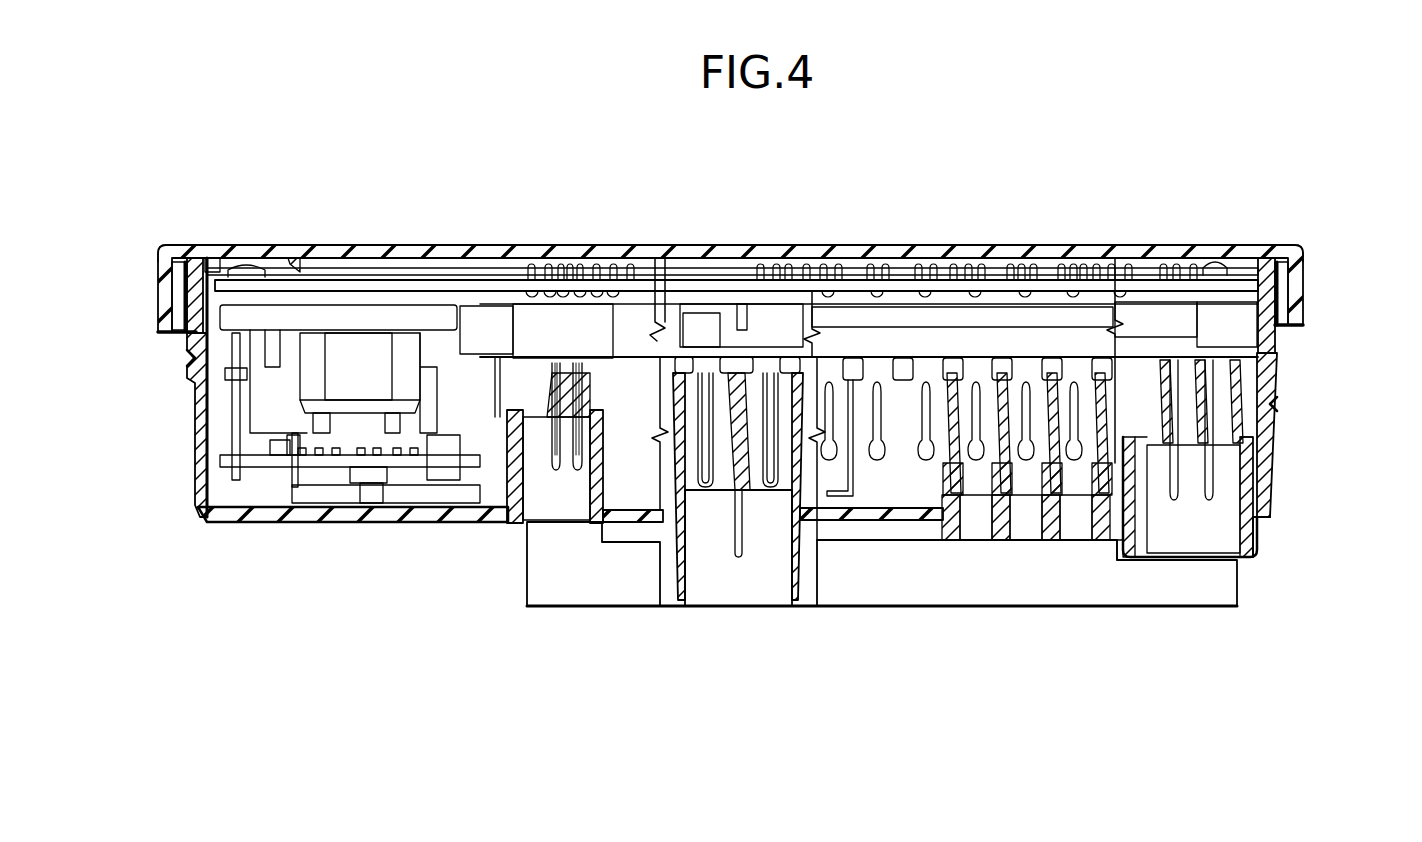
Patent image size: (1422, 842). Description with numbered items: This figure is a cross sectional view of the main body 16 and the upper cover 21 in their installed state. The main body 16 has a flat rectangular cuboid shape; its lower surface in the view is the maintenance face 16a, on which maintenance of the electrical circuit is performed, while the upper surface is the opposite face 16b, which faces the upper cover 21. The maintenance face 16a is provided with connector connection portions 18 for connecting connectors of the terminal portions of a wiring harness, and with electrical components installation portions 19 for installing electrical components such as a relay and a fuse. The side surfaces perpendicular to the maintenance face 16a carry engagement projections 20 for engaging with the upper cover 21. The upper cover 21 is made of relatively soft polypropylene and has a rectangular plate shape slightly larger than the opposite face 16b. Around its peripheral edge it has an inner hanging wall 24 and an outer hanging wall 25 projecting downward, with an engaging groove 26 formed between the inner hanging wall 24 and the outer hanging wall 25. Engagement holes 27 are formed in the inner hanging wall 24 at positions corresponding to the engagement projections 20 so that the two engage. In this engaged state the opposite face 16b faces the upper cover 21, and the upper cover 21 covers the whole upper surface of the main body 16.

The main body 16 is at (1268, 489).
The maintenance face 16a is at (355, 523).
The opposite face 16b is at (385, 283).
The connector connection portion 18 is at (567, 507).
The electrical components installation portion 19 is at (748, 570).
The engagement projection 20 is at (187, 372).
The upper cover 21 is at (288, 250).
The inner hanging wall 24 is at (197, 316).
The outer hanging wall 25 is at (158, 284).
The engaging groove 26 is at (172, 248).
The engagement hole 27 is at (192, 357).